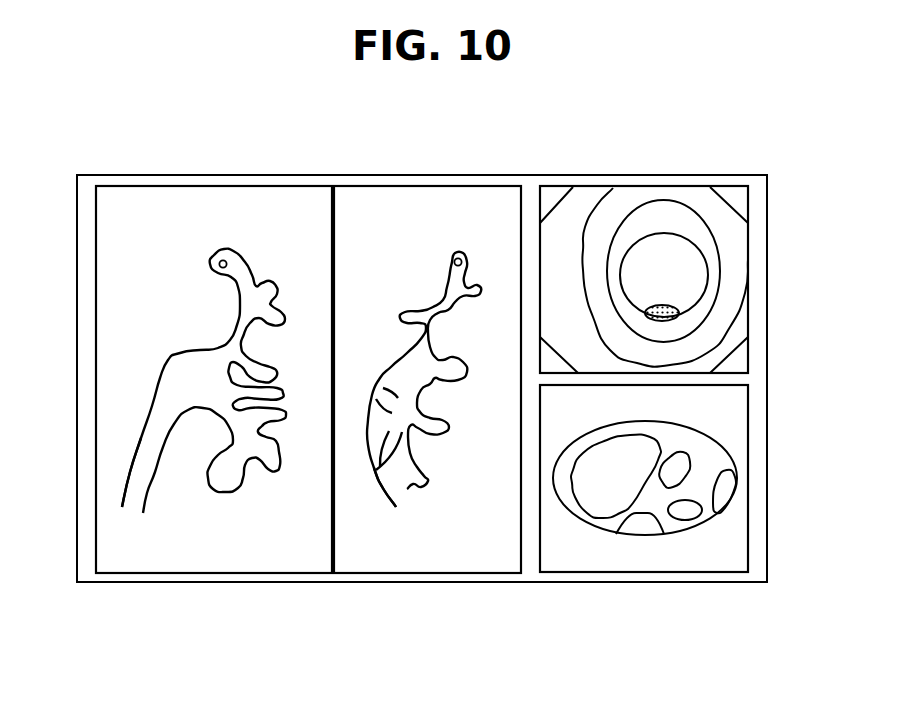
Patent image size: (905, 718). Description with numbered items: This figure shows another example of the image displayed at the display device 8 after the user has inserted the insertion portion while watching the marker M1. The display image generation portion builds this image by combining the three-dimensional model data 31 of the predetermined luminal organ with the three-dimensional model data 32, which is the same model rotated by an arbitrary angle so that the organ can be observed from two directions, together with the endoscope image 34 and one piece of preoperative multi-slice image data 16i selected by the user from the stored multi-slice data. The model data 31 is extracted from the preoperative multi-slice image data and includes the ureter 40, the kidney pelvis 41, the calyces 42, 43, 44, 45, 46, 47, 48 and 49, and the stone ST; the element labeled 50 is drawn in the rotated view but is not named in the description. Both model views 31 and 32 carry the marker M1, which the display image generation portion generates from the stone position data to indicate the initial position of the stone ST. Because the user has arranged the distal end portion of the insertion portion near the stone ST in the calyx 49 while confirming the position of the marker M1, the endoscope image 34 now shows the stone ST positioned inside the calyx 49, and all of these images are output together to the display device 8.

The display device 8 is at (378, 175).
The three-dimensional model data 31 is at (262, 248).
The three-dimensional model data 32 is at (480, 246).
The endoscope image 34 is at (748, 246).
The preoperative multi-slice image data 16i is at (748, 447).
The ureter 40 is at (148, 486).
The kidney pelvis 41 is at (190, 368).
The calyx 42 is at (220, 491).
The calyx 43 is at (280, 470).
The calyx 44 is at (287, 418).
The calyx 45 is at (287, 391).
The calyx 46 is at (282, 364).
The calyx 47 is at (283, 313).
The calyx 48 is at (273, 290).
The calyx 49 is at (658, 258).
The branch vessel 50 is at (420, 388).
The marker M1 is at (228, 262).
The stone ST is at (688, 313).